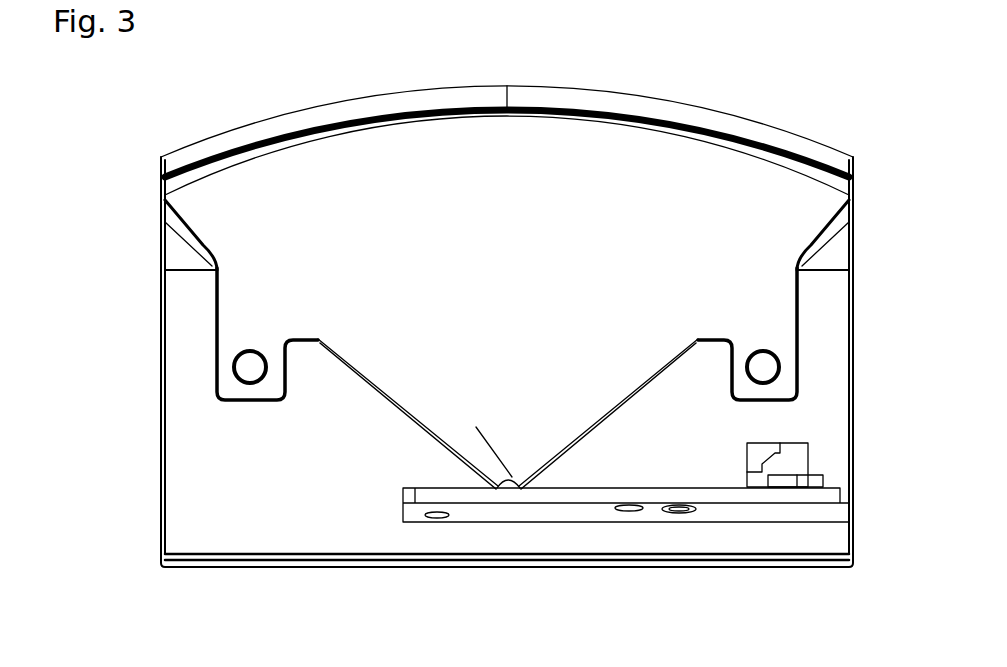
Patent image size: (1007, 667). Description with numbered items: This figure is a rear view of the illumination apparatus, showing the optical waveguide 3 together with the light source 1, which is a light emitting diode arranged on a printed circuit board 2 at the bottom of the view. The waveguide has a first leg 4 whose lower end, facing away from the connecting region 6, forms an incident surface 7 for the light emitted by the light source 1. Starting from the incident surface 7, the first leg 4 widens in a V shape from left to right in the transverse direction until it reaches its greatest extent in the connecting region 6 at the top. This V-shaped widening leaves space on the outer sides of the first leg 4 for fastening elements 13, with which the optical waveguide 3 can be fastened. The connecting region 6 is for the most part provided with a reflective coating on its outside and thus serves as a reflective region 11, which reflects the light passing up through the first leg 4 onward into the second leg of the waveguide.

The light source 1 is at (510, 477).
The printed circuit board 2 is at (580, 497).
The optical waveguide 3 is at (146, 422).
The first leg 4 is at (523, 305).
The connecting region 6 is at (696, 97).
The incident surface 7 is at (476, 427).
The reflective region 11 is at (393, 92).
The fastening elements 13 is at (784, 385).